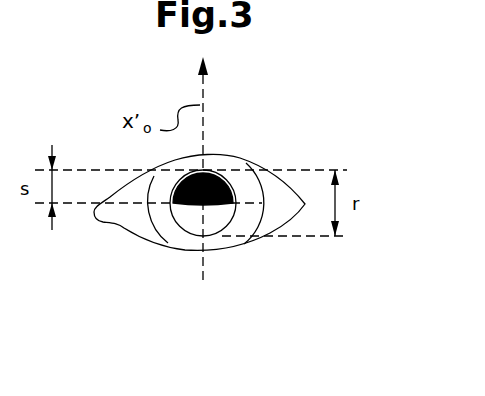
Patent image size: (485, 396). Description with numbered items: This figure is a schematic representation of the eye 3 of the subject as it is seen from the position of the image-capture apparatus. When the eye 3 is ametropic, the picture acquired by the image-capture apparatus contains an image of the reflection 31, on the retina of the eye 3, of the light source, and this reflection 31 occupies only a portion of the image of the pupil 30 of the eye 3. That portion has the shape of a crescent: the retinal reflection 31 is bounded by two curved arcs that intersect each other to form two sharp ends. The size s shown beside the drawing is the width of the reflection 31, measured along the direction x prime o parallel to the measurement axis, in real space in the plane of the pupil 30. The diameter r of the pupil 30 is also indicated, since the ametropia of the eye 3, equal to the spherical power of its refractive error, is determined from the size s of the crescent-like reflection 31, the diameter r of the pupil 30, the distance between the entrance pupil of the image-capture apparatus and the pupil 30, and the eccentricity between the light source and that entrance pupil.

The eye 3 is at (231, 291).
The pupil 30 is at (172, 220).
The reflection 31 is at (234, 203).